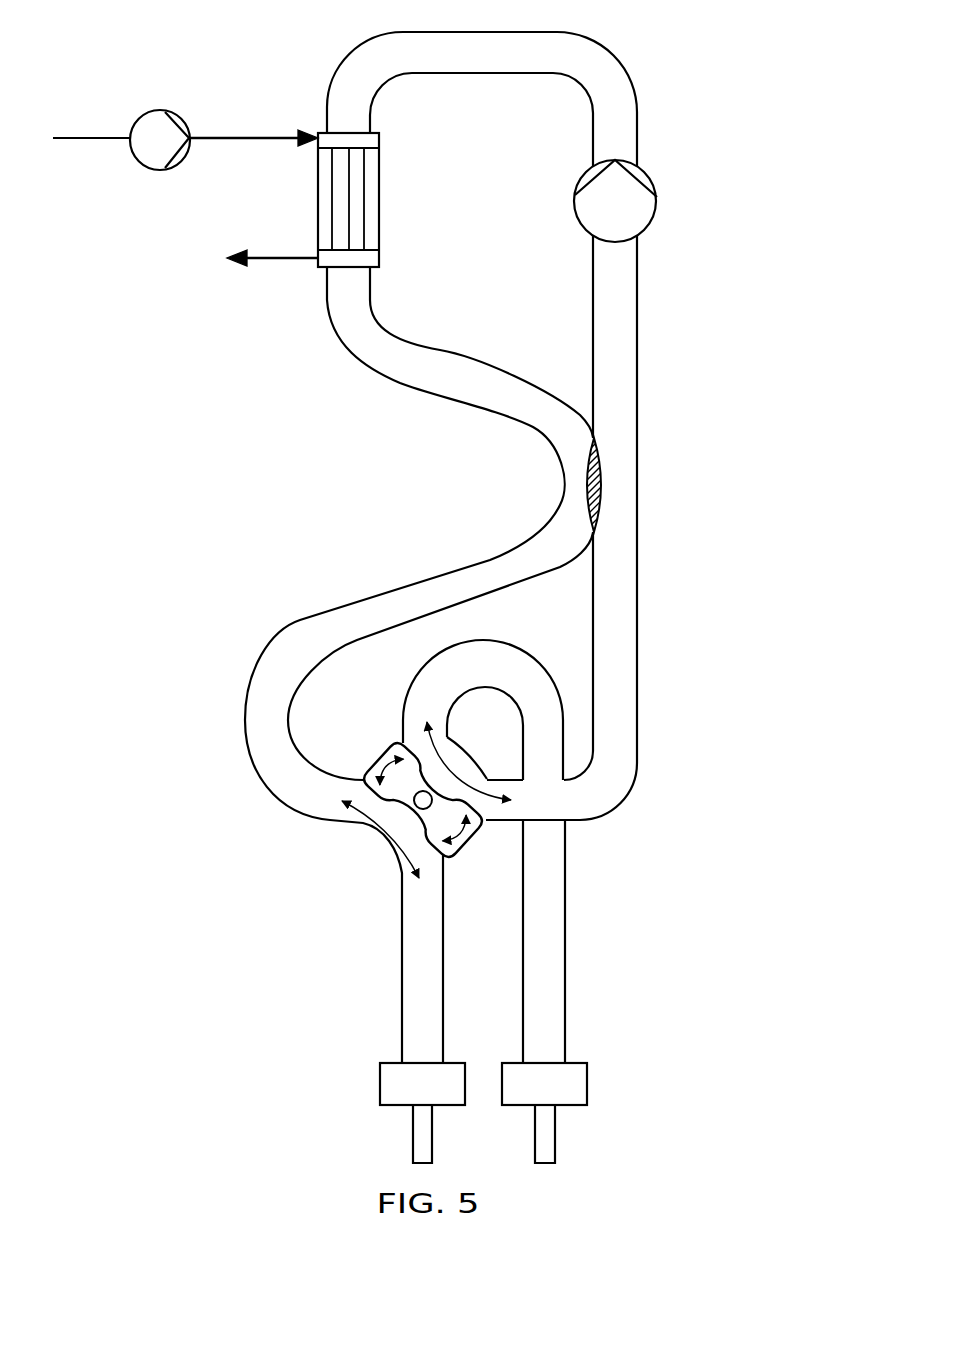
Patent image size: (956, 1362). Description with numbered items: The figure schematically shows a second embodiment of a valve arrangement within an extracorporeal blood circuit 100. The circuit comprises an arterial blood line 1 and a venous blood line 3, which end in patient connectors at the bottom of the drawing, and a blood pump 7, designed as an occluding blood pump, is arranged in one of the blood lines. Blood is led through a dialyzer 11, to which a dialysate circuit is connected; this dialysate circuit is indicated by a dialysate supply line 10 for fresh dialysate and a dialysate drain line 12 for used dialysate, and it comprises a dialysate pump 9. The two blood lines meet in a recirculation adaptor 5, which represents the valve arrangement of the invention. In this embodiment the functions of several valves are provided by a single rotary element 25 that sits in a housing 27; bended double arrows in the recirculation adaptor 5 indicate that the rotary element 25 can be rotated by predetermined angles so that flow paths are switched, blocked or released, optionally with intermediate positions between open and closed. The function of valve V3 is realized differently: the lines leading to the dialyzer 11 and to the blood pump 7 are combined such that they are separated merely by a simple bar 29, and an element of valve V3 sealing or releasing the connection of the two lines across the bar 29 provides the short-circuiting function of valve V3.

The extracorporeal blood circuit 100 is at (720, 149).
The arterial blood line 1 is at (420, 1013).
The venous blood line 3 is at (547, 1012).
The recirculation adaptor 5 is at (371, 879).
The blood pump 7 is at (640, 212).
The dialysate pump 9 is at (150, 145).
The dialysate supply line 10 is at (253, 137).
The dialyzer 11 is at (323, 200).
The dialysate drain line 12 is at (307, 260).
The rotary element 25 is at (468, 857).
The housing 27 is at (373, 845).
The bar 29 is at (605, 510).
The valve V3 is at (605, 470).